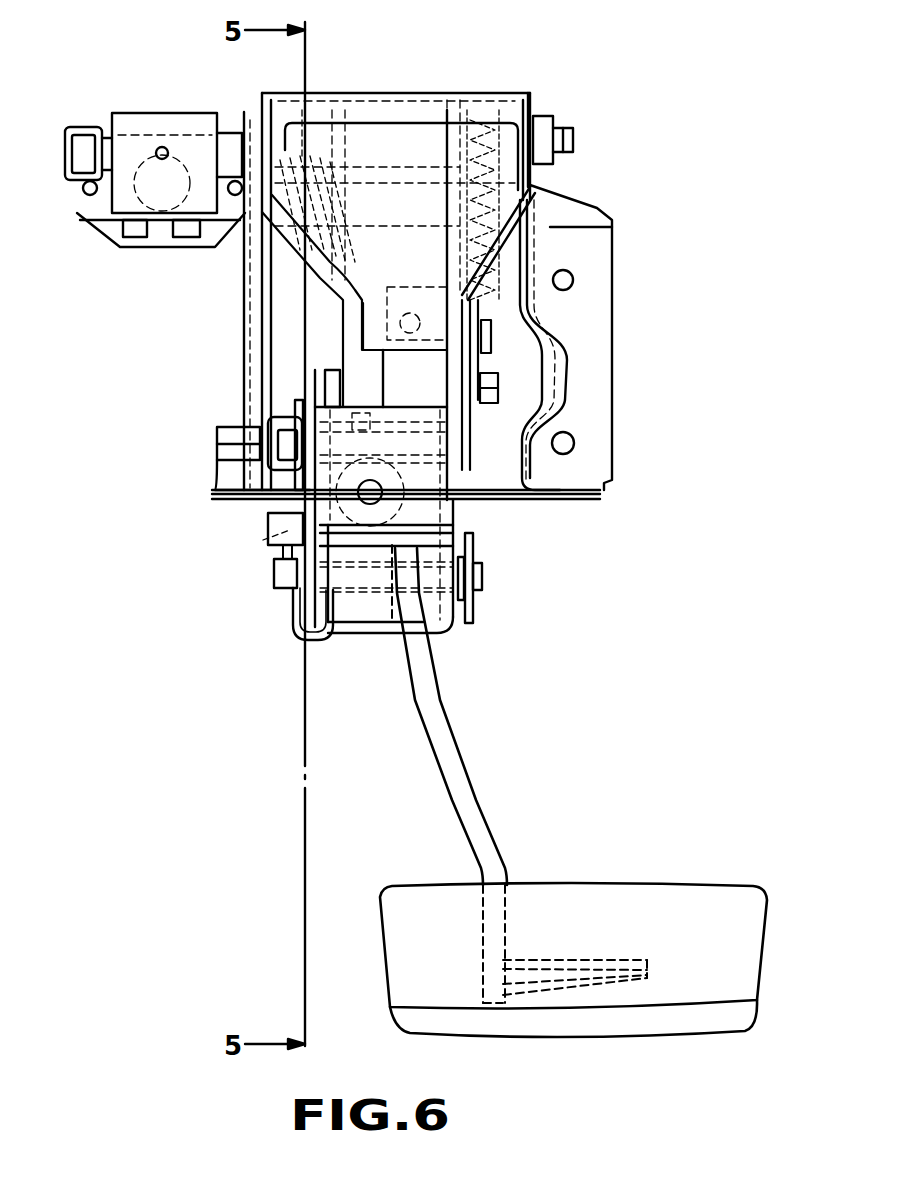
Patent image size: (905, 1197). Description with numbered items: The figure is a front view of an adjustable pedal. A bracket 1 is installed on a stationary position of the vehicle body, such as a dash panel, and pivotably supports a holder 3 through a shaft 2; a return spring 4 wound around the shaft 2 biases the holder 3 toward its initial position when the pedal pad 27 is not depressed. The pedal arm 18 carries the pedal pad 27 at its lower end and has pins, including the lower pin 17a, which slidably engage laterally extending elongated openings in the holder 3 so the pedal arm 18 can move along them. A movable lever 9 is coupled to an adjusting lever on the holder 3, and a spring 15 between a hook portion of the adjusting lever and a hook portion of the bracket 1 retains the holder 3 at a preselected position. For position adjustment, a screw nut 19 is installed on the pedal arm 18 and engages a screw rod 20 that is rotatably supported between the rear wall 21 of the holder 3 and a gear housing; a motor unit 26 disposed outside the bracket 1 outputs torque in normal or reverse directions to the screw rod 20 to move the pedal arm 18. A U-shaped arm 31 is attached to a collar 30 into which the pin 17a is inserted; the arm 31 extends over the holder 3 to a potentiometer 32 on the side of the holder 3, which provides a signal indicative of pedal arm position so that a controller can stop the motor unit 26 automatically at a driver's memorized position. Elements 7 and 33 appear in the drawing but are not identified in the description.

The bracket 1 is at (374, 93).
The shaft 2 is at (575, 140).
The holder 3 is at (323, 333).
The return spring 4 is at (301, 112).
The stopper member 7 is at (490, 337).
The movable lever 9 is at (467, 360).
The spring 15 is at (517, 268).
The pin 17a is at (484, 577).
The pedal arm 18 is at (458, 755).
The screw nut 19 is at (263, 540).
The screw rod 20 is at (370, 505).
The rear wall 21 is at (440, 512).
The motor unit 26 is at (150, 150).
The pedal pad 27 is at (612, 890).
The collar 30 is at (383, 577).
The U-shaped arm 31 is at (293, 642).
The potentiometer 32 is at (273, 557).
The switch body 33 is at (290, 517).